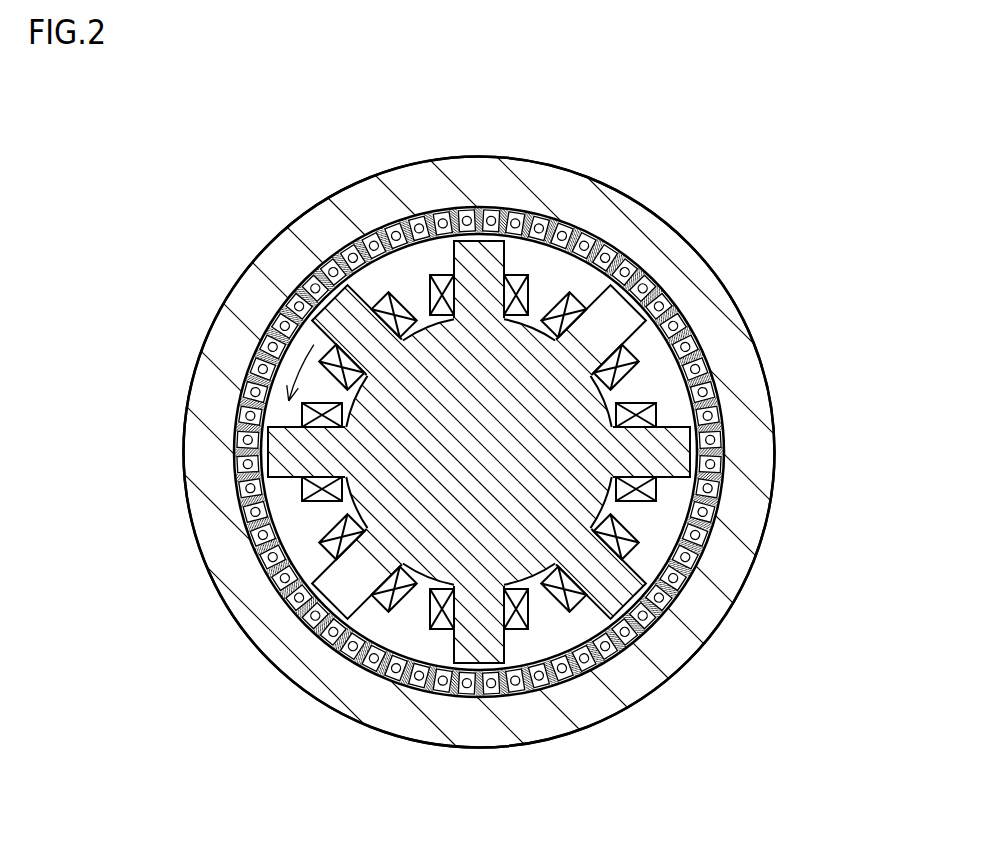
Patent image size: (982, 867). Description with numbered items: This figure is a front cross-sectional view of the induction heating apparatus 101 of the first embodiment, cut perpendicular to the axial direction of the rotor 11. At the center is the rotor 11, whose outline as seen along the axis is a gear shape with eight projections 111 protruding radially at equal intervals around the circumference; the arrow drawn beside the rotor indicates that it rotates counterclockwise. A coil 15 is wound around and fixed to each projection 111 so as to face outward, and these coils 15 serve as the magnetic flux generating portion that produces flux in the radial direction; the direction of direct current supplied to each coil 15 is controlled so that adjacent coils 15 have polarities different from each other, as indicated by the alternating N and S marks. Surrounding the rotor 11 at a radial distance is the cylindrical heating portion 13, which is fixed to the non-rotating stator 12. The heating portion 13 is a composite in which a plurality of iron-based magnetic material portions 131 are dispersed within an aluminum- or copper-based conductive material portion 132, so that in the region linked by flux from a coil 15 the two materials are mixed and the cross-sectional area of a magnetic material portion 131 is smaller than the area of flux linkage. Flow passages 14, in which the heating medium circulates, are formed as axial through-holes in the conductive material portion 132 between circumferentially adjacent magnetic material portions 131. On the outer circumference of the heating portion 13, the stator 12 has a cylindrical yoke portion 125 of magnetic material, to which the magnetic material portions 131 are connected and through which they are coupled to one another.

The induction heating apparatus 101 is at (202, 247).
The stator 12 is at (645, 182).
The yoke portion 125 is at (207, 385).
The heating portion 13 is at (579, 206).
The magnetic material portion 131 is at (537, 210).
The conductive material portion 132 is at (492, 212).
The flow passage 14 is at (470, 215).
The rotor 11 is at (427, 333).
The projection 111 is at (362, 292).
The coil 15 is at (383, 610).